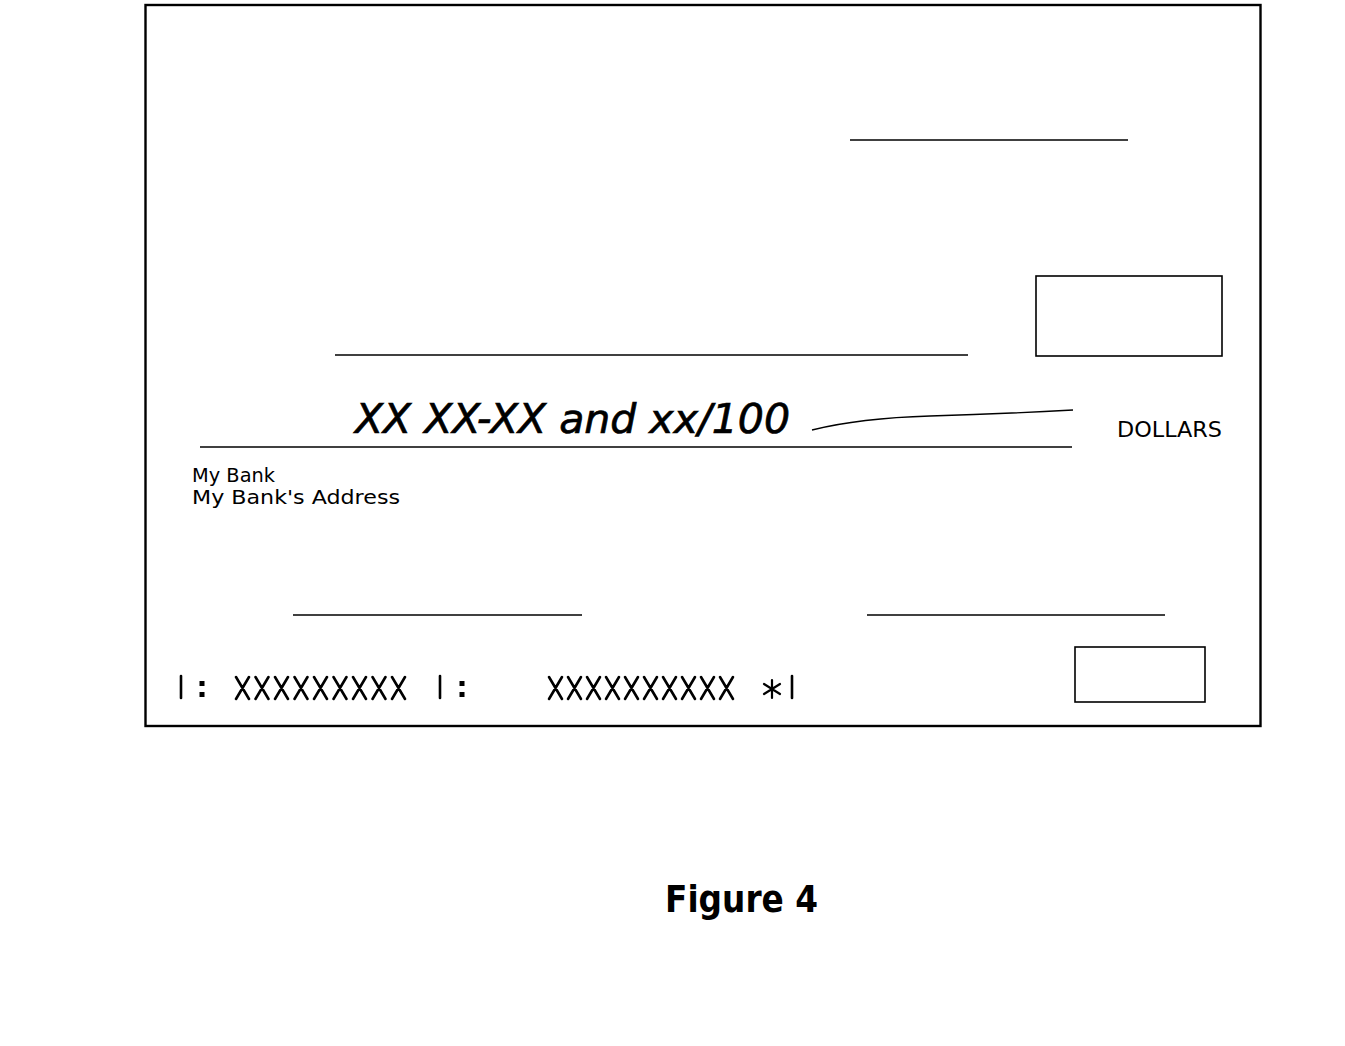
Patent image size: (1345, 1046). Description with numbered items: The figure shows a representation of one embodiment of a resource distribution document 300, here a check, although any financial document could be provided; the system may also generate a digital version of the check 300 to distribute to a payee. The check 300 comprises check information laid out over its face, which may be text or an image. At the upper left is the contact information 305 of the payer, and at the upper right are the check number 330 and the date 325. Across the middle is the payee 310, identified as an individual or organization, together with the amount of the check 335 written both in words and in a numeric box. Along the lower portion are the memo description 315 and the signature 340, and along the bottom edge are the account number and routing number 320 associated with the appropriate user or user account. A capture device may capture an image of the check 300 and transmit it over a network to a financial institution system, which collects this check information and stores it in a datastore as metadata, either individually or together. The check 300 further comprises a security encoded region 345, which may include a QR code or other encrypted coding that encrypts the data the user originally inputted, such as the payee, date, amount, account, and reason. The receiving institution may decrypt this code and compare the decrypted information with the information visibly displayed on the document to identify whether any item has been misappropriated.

The resource distribution document 300 is at (963, 702).
The contact information 305 is at (183, 42).
The payee 310 is at (183, 283).
The memo description 315 is at (183, 555).
The account number and routing number 320 is at (790, 743).
The date 325 is at (775, 75).
The check number 330 is at (1220, 36).
The amount of the check 335 is at (1222, 262).
The signature 340 is at (1167, 541).
The security encoded region 345 is at (1147, 702).